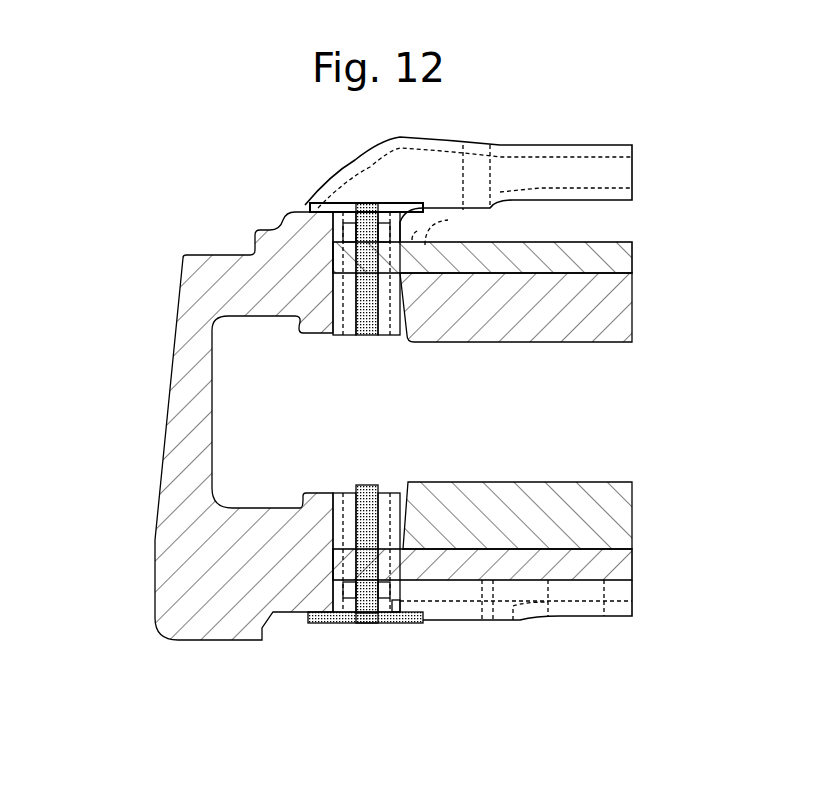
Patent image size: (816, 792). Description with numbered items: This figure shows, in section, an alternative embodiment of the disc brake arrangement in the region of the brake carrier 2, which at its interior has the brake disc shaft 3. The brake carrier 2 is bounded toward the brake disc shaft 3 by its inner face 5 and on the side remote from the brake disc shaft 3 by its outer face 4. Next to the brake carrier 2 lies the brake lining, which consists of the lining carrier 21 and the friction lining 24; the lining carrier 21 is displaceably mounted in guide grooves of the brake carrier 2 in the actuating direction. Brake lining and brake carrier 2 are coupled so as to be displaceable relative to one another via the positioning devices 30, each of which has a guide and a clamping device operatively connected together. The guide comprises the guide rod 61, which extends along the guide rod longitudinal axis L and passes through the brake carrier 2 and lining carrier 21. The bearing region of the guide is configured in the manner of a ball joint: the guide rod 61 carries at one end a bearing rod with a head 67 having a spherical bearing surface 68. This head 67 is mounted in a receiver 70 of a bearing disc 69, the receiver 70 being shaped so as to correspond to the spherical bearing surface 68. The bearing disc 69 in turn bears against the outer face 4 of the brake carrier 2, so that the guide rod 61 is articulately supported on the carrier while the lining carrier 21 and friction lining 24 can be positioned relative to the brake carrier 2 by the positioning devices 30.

The brake carrier 2 is at (193, 535).
The brake disc shaft 3 is at (641, 410).
The outer face 4 is at (572, 680).
The inner face 5 is at (406, 440).
The lining carrier 21 is at (572, 262).
The friction lining 24 is at (572, 318).
The positioning device 30 is at (336, 511).
The guide rod 61 is at (373, 535).
The head 67 is at (367, 620).
The spherical bearing surface 68 is at (386, 620).
The bearing disc 69 is at (323, 620).
The receiver 70 is at (458, 680).
The guide rod longitudinal axis L is at (367, 297).